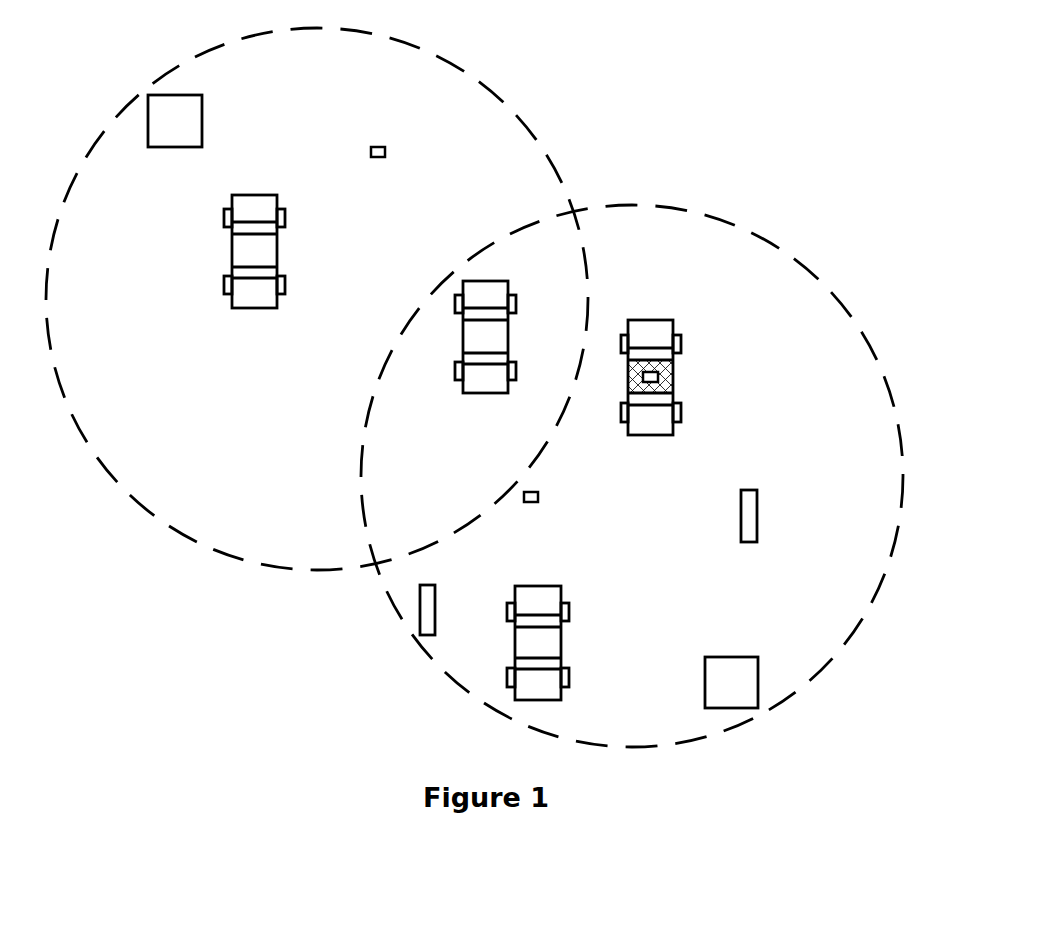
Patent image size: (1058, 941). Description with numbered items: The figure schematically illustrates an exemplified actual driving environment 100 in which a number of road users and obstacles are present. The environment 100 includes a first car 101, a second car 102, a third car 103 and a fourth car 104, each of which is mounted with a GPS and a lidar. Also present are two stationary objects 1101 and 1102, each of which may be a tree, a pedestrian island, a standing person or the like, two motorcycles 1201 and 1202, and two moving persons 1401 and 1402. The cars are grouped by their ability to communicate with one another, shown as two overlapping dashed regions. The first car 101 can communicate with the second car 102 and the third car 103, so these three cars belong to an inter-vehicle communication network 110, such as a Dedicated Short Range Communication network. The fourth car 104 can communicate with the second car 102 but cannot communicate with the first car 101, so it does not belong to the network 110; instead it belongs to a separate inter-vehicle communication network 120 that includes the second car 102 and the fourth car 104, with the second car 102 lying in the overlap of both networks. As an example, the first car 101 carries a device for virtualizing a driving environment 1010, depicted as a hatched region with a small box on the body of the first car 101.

The actual driving environment 100 is at (777, 46).
The inter-vehicle communication network 110 is at (745, 230).
The inter-vehicle communication network 120 is at (545, 150).
The first car 101 is at (665, 320).
The device for virtualizing a driving environment 1010 is at (658, 375).
The second car 102 is at (517, 297).
The third car 103 is at (561, 586).
The fourth car 104 is at (252, 308).
The stationary object 1101 is at (758, 657).
The stationary object 1102 is at (202, 95).
The motorcycle 1201 is at (741, 542).
The motorcycle 1202 is at (435, 585).
The moving person 1401 is at (538, 492).
The moving person 1402 is at (385, 147).